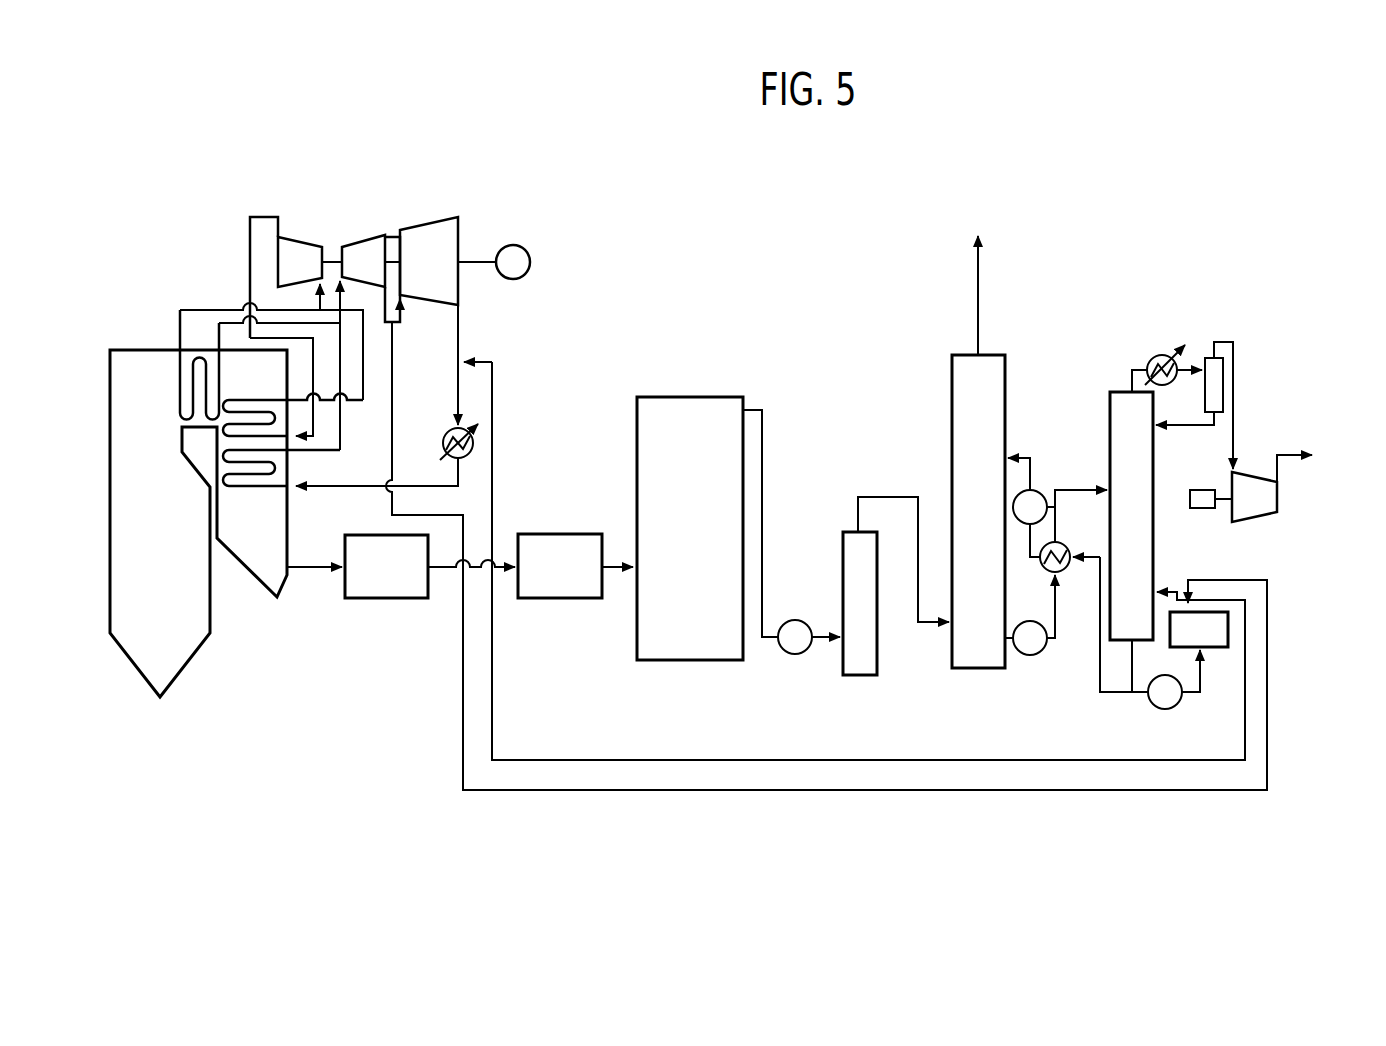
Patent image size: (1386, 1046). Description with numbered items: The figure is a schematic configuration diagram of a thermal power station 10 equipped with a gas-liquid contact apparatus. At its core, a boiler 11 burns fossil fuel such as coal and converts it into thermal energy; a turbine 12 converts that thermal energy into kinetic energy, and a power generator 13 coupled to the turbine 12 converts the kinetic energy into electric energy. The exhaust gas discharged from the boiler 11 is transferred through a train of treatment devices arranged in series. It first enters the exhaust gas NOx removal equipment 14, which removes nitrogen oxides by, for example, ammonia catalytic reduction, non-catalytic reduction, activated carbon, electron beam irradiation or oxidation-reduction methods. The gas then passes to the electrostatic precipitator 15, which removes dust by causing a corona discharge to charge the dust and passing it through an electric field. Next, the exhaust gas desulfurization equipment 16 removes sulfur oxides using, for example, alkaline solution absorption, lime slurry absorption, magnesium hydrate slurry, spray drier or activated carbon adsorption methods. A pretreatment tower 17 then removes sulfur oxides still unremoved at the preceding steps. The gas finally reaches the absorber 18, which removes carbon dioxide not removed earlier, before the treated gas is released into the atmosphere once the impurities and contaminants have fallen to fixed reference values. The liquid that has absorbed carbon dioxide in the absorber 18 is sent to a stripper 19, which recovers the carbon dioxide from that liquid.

The thermal power station 10 is at (600, 180).
The boiler 11 is at (142, 350).
The turbine 12 is at (328, 216).
The power generator 13 is at (513, 244).
The exhaust gas NOx removal equipment 14 is at (388, 598).
The electrostatic precipitator 15 is at (560, 598).
The exhaust gas desulfurization equipment 16 is at (690, 660).
The pretreatment tower 17 is at (858, 675).
The absorber 18 is at (978, 668).
The stripper 19 is at (1153, 543).